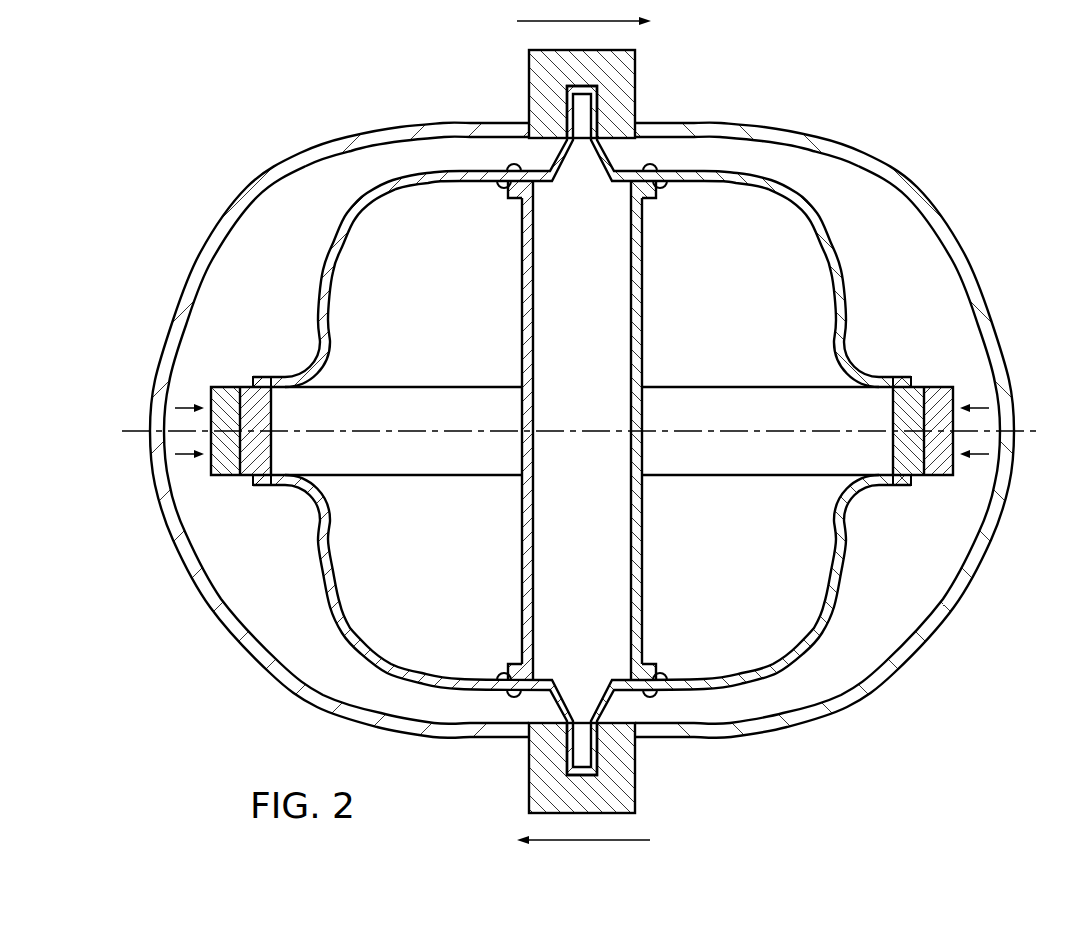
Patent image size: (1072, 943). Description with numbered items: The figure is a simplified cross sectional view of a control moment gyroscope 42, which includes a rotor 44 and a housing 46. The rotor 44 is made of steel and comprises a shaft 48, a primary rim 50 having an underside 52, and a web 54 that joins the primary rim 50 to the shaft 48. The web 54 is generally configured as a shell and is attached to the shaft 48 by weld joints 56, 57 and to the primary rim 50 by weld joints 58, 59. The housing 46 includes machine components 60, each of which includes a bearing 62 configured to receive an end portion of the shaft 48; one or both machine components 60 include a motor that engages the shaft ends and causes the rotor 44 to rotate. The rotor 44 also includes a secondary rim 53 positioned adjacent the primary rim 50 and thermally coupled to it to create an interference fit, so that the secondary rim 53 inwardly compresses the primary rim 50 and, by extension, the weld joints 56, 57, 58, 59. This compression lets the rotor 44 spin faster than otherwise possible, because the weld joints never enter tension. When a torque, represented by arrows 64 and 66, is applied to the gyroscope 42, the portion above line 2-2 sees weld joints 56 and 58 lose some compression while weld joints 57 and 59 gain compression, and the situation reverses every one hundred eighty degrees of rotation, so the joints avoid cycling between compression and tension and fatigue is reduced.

The line 2- 2 is at (581, 435).
The control moment gyroscope 42 is at (858, 110).
The rotor 44 is at (372, 183).
The housing 46 is at (921, 210).
The shaft 48 is at (522, 283).
The primary rim 50 is at (272, 410).
The underside 52 is at (436, 386).
The secondary rim 53 is at (224, 386).
The web 54 is at (338, 236).
The weld joint 56 is at (510, 167).
The weld joint 57 is at (655, 167).
The weld joint 58 is at (257, 378).
The weld joint 59 is at (256, 482).
The machine component 60 is at (636, 72).
The bearing 62 is at (565, 92).
The arrow 64 is at (517, 21).
The arrow 66 is at (640, 840).